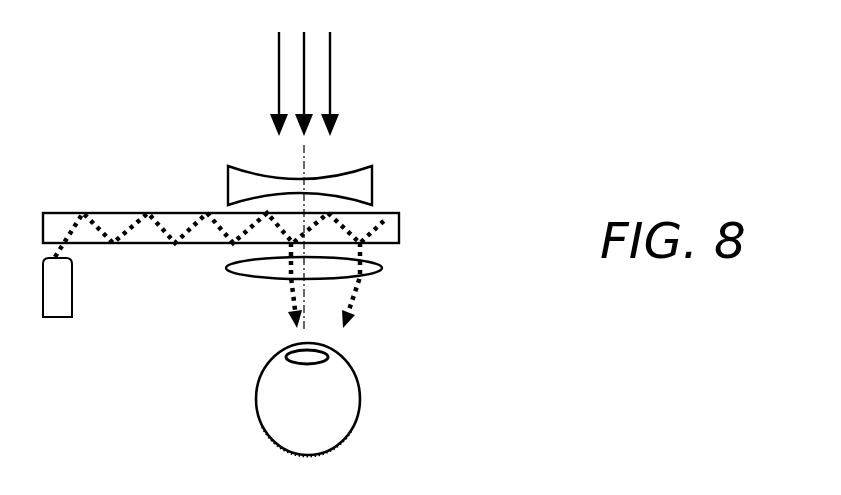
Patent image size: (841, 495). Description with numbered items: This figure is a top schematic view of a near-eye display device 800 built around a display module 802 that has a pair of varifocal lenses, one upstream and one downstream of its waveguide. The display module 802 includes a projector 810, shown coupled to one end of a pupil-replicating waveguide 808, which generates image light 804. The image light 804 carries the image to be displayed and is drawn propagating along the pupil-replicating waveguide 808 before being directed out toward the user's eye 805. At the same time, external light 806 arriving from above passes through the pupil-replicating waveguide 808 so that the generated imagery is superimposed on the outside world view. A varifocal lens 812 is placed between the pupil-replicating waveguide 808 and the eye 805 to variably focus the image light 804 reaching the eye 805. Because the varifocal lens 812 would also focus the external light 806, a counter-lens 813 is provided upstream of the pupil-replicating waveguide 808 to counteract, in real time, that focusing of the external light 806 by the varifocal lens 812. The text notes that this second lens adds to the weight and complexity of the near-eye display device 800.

The near-eye display device 800 is at (158, 100).
The display module 802 is at (80, 200).
The image light 804 is at (141, 225).
The user's eye 805 is at (337, 413).
The external light 806 is at (304, 75).
The pupil-replicating waveguide 808 is at (388, 227).
The projector 810 is at (58, 308).
The varifocal lens 812 is at (377, 278).
The counter-lens 813 is at (368, 188).